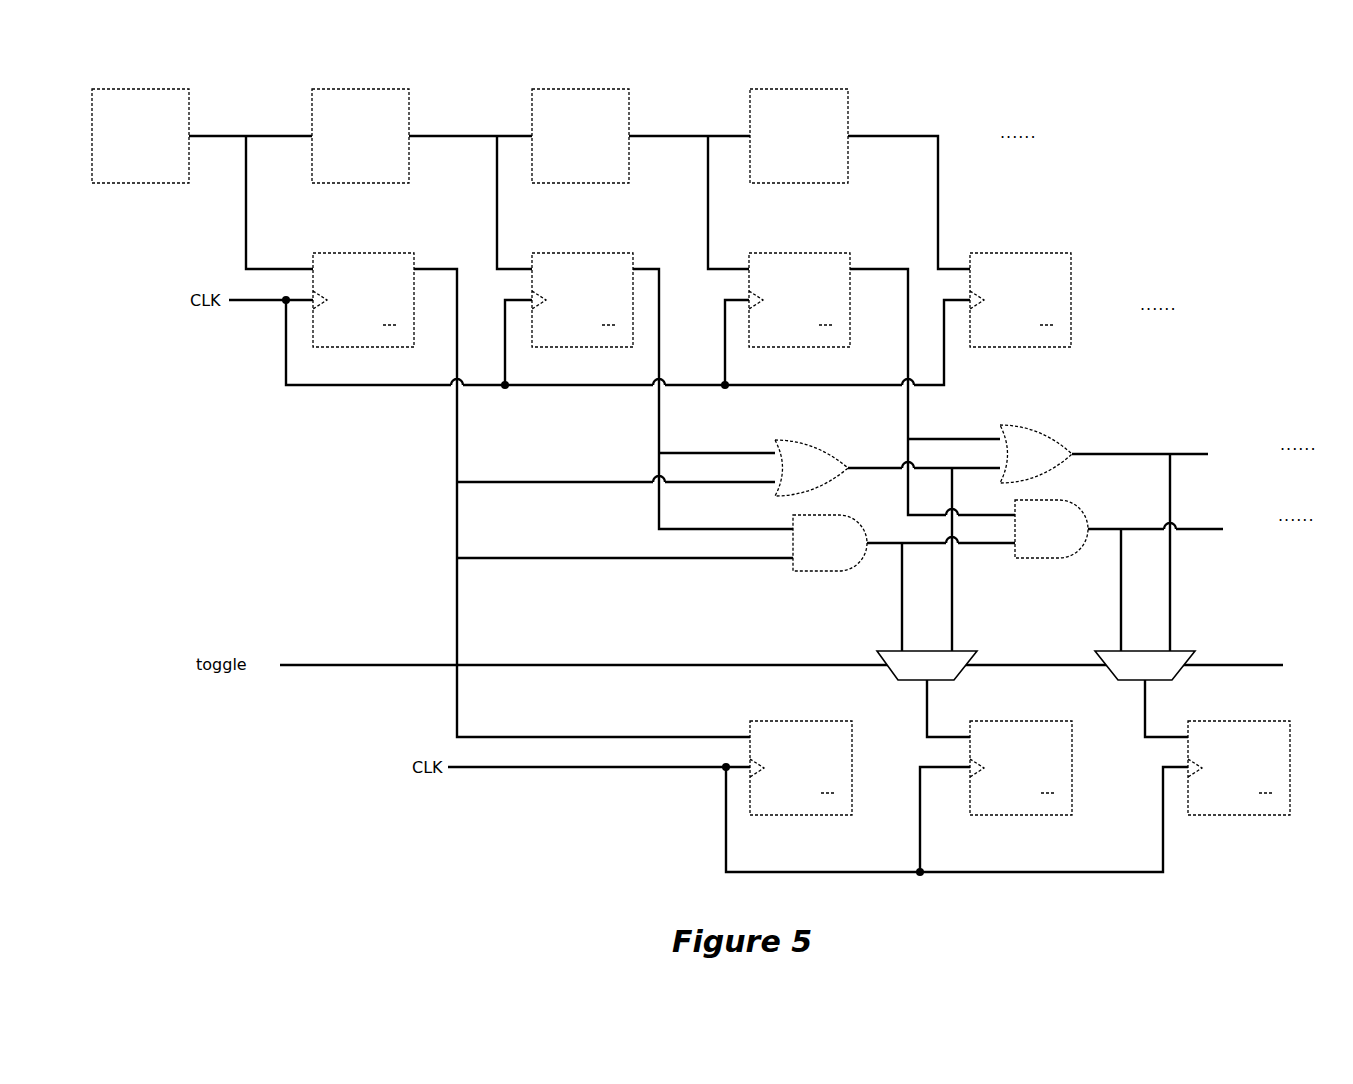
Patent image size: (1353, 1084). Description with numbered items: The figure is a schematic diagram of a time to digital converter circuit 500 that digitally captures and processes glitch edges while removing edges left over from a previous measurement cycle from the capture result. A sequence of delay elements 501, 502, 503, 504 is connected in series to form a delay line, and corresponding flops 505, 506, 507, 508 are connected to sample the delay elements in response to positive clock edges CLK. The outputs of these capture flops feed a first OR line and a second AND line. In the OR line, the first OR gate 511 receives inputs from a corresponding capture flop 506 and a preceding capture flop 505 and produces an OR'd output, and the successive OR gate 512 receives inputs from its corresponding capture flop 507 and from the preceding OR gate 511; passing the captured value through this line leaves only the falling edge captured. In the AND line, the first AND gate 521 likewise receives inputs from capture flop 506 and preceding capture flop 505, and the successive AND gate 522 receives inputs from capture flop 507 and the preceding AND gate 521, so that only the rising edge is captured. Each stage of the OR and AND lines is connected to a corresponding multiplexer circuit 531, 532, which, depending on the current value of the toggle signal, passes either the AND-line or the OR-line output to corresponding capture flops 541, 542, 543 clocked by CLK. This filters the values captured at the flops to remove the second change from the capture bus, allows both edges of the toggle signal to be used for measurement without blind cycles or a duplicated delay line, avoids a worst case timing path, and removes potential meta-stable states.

The time to digital converter circuit 500 is at (148, 62).
The delay element 501 is at (140, 147).
The delay element 502 is at (360, 147).
The delay element 503 is at (580, 147).
The delay element 504 is at (799, 147).
The capture flop 505 is at (364, 312).
The capture flop 506 is at (583, 312).
The capture flop 507 is at (800, 312).
The capture flop 508 is at (1021, 312).
The OR gate 511 is at (811, 468).
The OR gate 512 is at (1036, 454).
The AND gate 521 is at (830, 543).
The AND gate 522 is at (1051, 529).
The multiplexer circuit 531 is at (927, 665).
The multiplexer circuit 532 is at (1145, 665).
The capture flop 541 is at (801, 782).
The capture flop 542 is at (1021, 782).
The capture flop 543 is at (1239, 782).